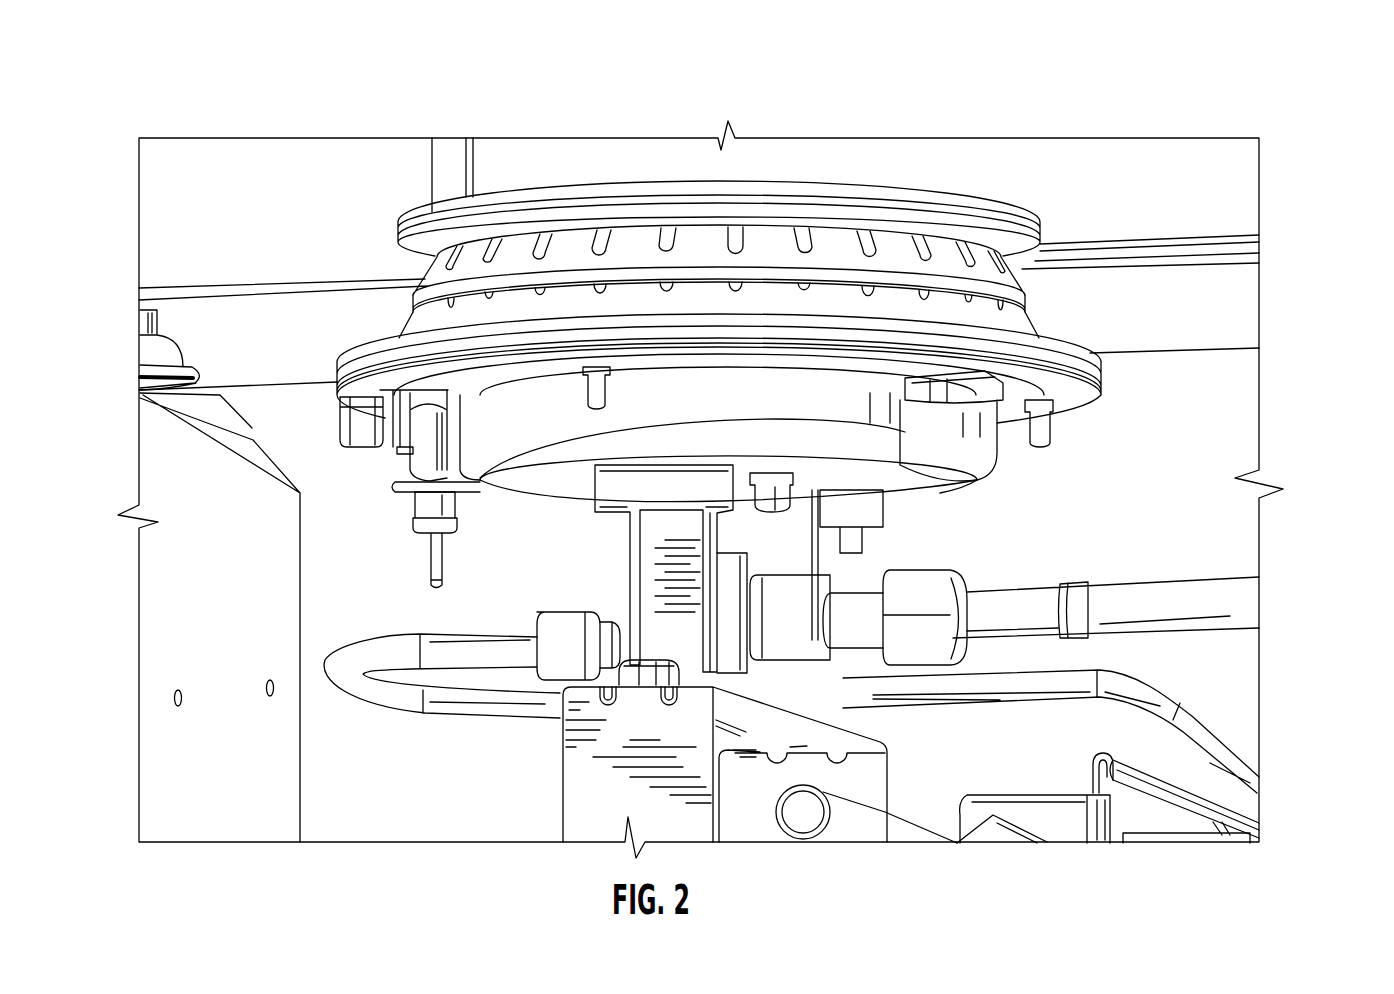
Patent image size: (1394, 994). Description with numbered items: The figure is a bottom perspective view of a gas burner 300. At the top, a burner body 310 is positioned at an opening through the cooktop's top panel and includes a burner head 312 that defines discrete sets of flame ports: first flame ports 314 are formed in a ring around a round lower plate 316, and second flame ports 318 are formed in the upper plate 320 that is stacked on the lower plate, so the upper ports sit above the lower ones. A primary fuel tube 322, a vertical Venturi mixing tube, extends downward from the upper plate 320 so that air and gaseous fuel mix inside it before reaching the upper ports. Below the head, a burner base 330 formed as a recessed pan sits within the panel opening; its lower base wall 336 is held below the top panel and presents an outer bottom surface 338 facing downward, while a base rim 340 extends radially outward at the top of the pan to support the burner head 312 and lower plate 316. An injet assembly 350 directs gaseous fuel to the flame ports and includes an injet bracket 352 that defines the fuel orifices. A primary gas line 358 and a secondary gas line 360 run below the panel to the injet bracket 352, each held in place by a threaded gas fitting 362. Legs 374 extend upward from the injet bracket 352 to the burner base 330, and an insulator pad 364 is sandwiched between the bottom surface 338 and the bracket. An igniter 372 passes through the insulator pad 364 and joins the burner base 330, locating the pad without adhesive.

The gas burner 300 is at (922, 85).
The burner body 310 is at (417, 203).
The burner head 312 is at (440, 283).
The first flame ports 314 is at (528, 292).
The lower plate 316 is at (423, 320).
The second flame ports 318 is at (739, 257).
The upper plate 320 is at (576, 240).
The primary fuel tube 322 is at (761, 482).
The burner base 330 is at (477, 428).
The lower base wall 336 is at (481, 483).
The outer bottom surface 338 is at (961, 485).
The base rim 340 is at (1068, 400).
The injet assembly 350 is at (472, 605).
The injet bracket 352 is at (765, 683).
The primary gas line 358 is at (1248, 600).
The secondary gas line 360 is at (385, 690).
The threaded gas fitting 362 is at (560, 666).
The insulator pad 364 is at (560, 484).
The igniter 372 is at (418, 507).
The legs 374 is at (658, 540).